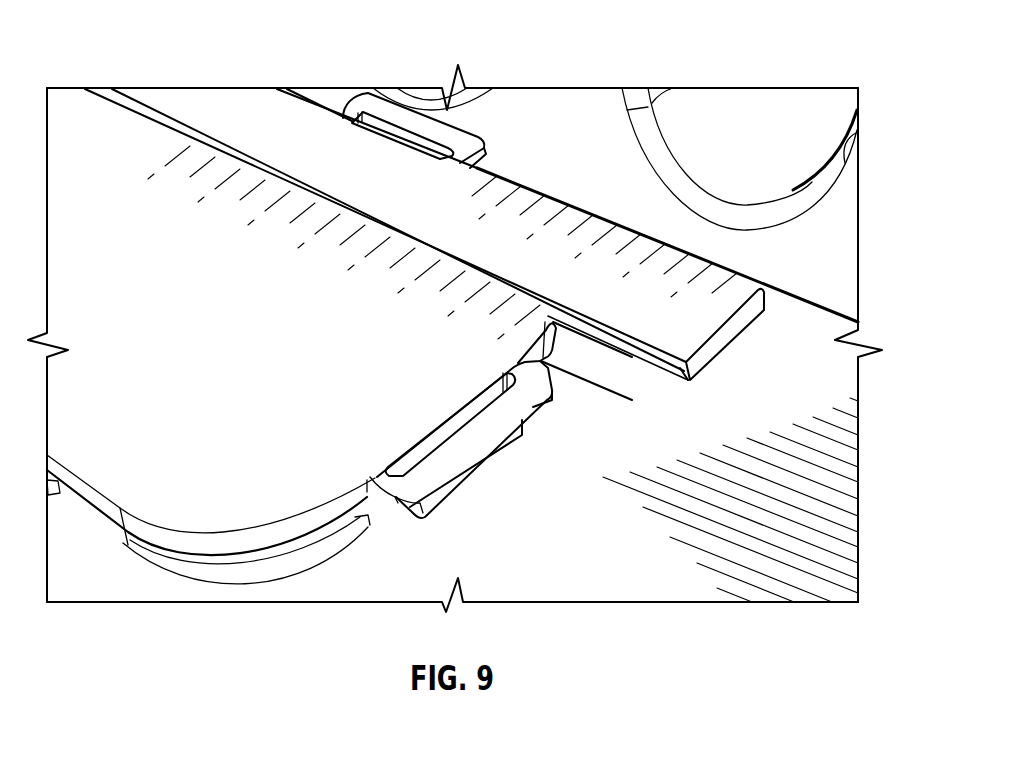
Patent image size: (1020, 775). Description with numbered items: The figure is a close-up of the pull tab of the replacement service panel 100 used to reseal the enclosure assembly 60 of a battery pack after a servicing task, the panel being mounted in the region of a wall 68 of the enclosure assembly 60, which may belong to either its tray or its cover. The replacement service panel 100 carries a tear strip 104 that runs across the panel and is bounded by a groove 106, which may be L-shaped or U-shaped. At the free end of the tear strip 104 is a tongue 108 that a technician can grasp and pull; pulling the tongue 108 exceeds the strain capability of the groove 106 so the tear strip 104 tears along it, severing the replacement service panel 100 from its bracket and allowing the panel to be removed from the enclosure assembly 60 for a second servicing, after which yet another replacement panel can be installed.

The enclosure assembly 60 is at (797, 320).
The wall 68 is at (840, 515).
The replacement service panel 100 is at (105, 138).
The tear strip 104 is at (240, 107).
The groove 106 is at (350, 213).
The tongue 108 is at (688, 337).